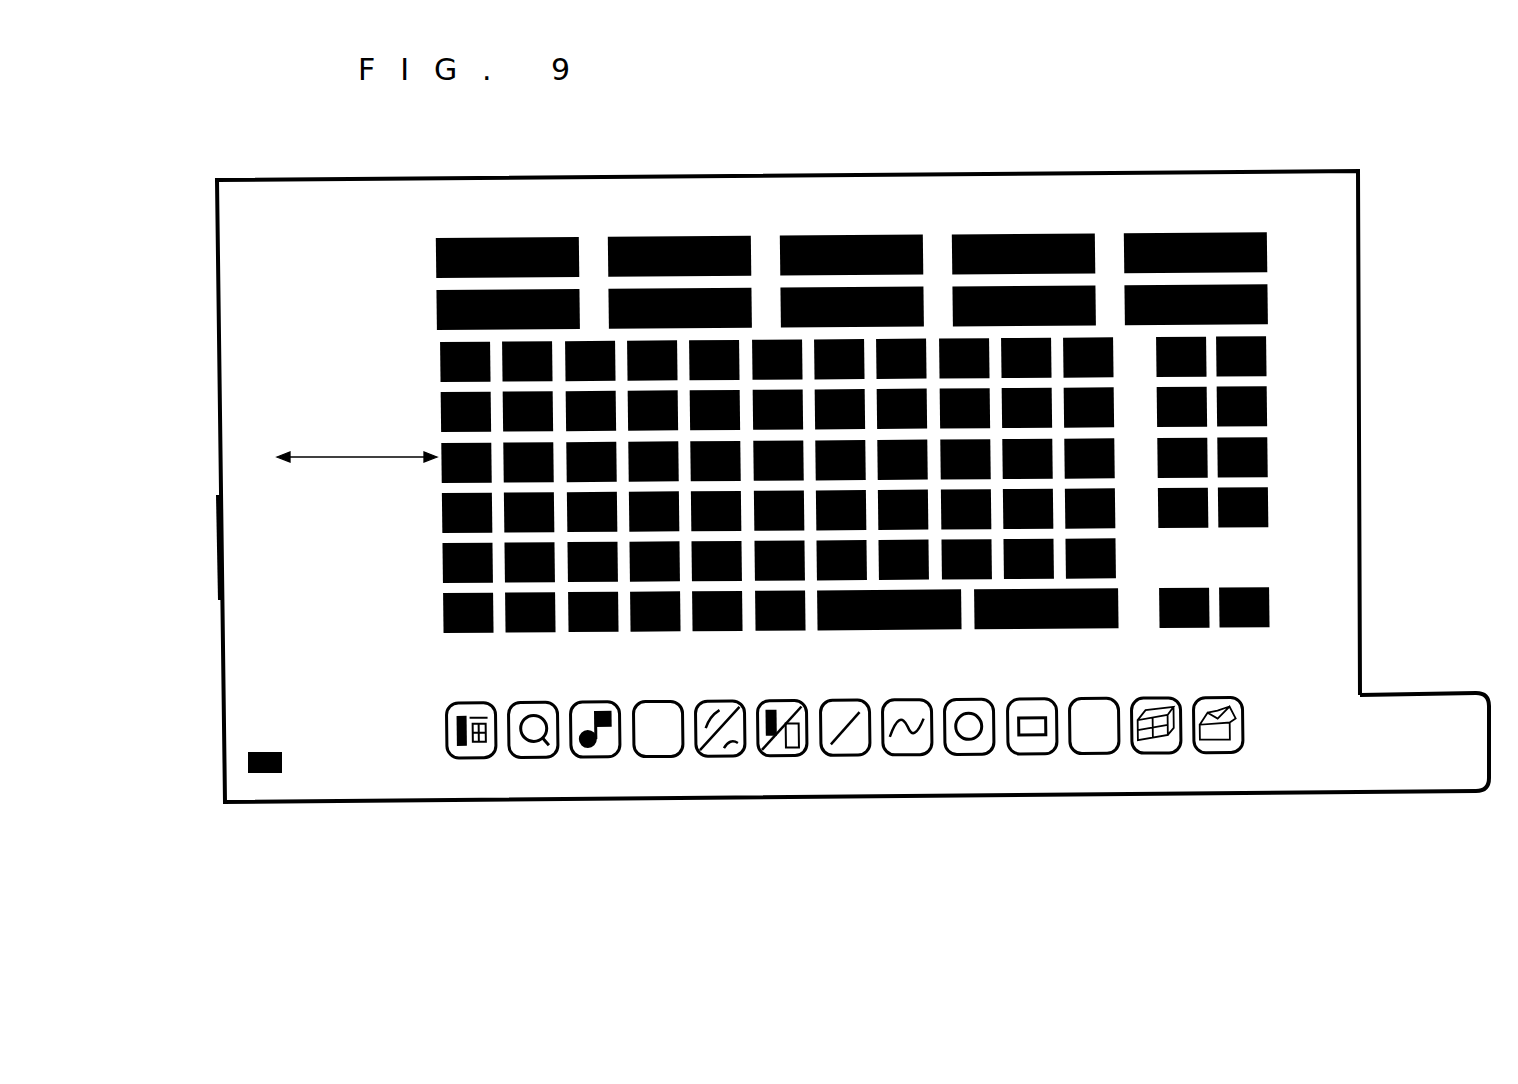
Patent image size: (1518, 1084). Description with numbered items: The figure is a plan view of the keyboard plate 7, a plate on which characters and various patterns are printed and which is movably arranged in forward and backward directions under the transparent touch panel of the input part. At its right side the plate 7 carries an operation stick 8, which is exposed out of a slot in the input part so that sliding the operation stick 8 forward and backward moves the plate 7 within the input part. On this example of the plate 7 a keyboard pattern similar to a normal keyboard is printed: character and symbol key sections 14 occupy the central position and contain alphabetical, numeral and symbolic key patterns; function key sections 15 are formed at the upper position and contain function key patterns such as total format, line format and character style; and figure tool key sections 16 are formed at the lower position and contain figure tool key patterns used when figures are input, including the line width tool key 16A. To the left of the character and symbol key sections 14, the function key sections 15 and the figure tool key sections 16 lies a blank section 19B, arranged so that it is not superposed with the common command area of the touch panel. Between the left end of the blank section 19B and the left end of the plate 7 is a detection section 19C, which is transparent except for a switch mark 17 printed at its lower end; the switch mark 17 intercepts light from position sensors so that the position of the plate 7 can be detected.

The plate 7 is at (927, 197).
The operation stick 8 is at (1412, 727).
The character and symbol key sections 14 is at (1280, 632).
The function key sections 15 is at (1277, 227).
The figure tool key sections 16 is at (896, 772).
The line width tool key 16A is at (476, 758).
The switch mark 17 is at (282, 770).
The blank section 19B is at (357, 438).
The detection section 19C is at (247, 546).